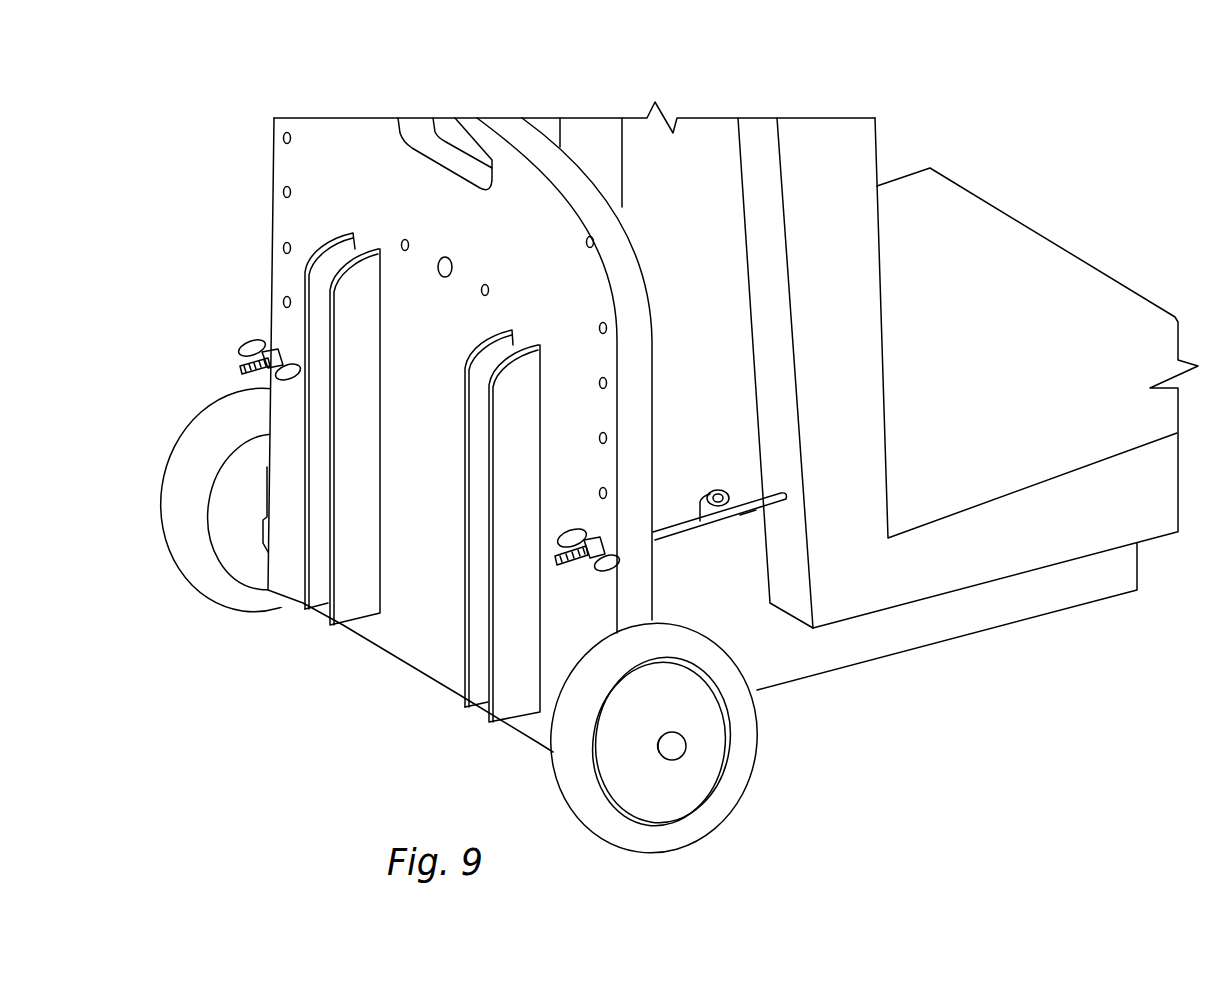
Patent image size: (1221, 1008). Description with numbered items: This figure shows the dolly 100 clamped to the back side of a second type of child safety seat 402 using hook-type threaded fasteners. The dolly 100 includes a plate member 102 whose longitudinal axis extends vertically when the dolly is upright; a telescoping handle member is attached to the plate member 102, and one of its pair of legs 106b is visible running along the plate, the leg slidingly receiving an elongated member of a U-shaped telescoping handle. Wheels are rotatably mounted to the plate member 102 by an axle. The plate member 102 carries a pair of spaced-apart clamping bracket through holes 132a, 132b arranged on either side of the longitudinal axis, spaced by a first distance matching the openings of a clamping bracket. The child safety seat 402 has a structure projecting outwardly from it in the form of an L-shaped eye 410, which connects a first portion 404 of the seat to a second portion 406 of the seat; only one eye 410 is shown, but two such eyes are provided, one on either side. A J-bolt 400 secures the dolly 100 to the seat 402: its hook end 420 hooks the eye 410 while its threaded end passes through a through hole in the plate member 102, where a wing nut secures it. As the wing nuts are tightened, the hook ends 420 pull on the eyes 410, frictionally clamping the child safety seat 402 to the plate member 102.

The dolly 100 is at (235, 168).
The plate member 102 is at (342, 165).
The leg 106b is at (605, 147).
The clamping bracket through hole 132a is at (404, 252).
The clamping bracket through hole 132b is at (486, 284).
The J-bolt 400 is at (682, 513).
The child safety seat 402 is at (1053, 632).
The first portion of the child safety seat 404 is at (779, 421).
The second portion of the child safety seat 406 is at (716, 418).
The L-shaped eye 410 is at (747, 513).
The hook end 420 is at (721, 491).